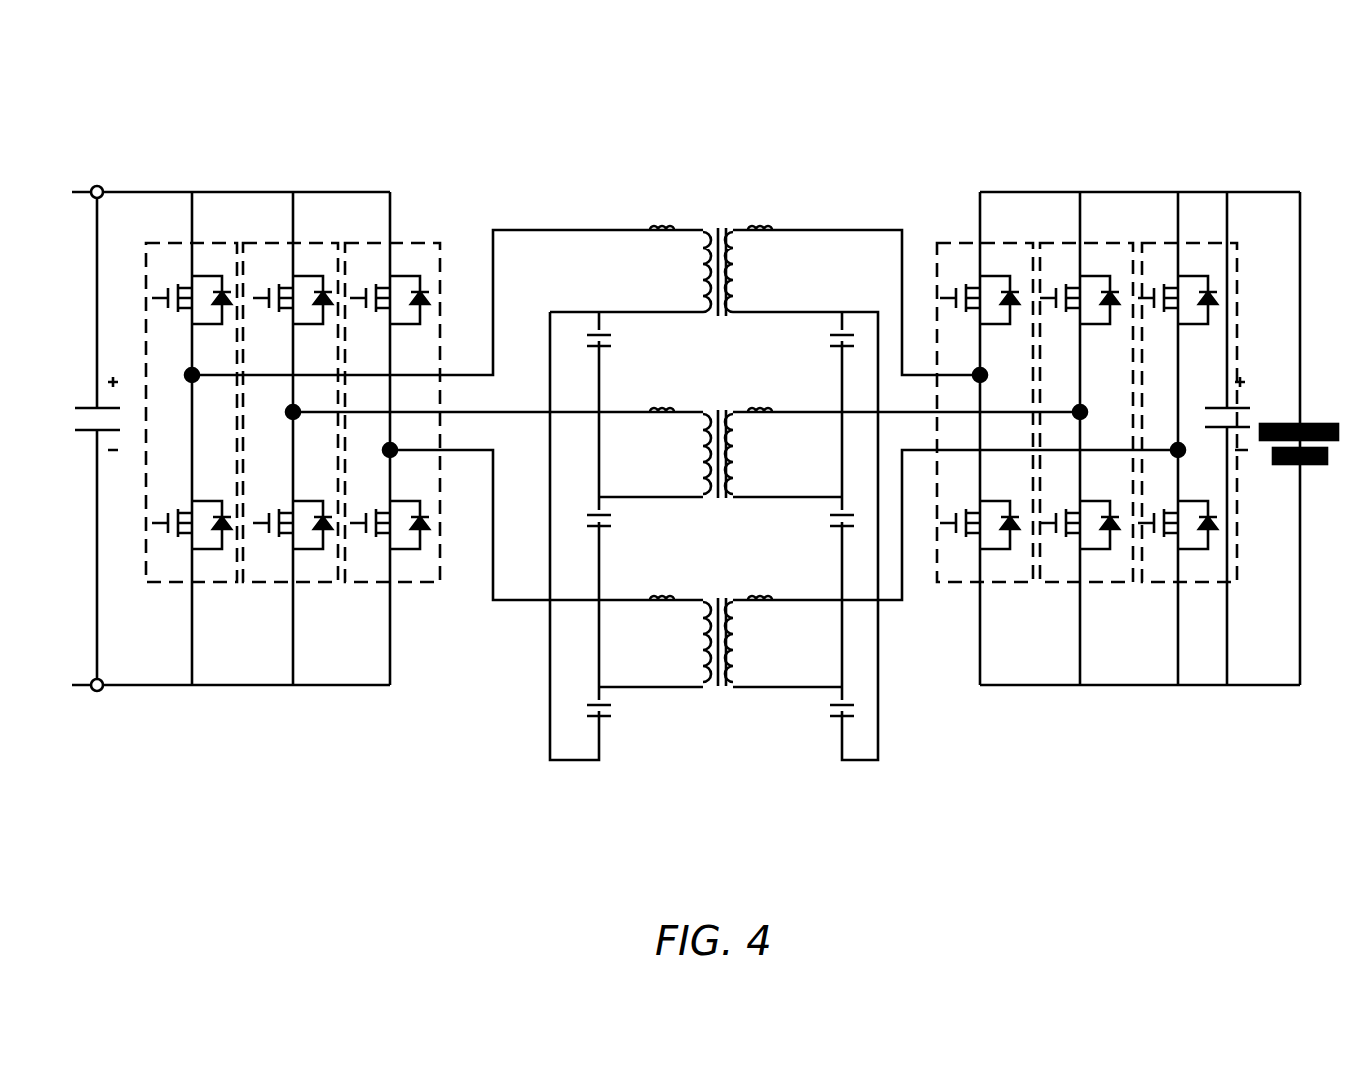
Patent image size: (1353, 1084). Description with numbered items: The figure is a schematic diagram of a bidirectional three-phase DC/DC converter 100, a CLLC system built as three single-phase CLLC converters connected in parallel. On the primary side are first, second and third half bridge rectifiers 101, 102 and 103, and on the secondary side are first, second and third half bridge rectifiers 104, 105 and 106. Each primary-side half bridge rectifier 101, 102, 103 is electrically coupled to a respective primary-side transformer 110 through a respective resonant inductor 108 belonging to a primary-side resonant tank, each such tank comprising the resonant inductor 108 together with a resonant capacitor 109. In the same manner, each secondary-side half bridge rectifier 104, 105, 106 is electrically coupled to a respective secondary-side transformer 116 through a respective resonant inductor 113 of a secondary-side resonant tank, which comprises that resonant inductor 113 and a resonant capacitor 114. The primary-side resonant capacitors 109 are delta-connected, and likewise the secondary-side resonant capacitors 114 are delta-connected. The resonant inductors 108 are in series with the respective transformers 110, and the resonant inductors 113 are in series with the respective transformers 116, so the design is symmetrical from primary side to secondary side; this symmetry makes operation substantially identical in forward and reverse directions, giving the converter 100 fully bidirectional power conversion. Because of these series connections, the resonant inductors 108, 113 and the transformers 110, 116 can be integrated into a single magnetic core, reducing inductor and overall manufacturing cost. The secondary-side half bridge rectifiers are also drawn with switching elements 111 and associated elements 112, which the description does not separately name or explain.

The bidirectional three-phase DC/DC converter 100 is at (188, 170).
The first half bridge rectifier 101 is at (205, 243).
The second half bridge rectifier 102 is at (298, 243).
The third half bridge rectifier 103 is at (410, 243).
The first half bridge rectifier 104 is at (167, 297).
The second half bridge rectifier 105 is at (225, 303).
The third half bridge rectifier 106 is at (192, 370).
The resonant inductor 108 is at (662, 225).
The resonant capacitor 109 is at (610, 338).
The transformer 110 is at (704, 270).
The switch transistor 111 is at (958, 292).
The diode 112 is at (1013, 303).
The resonant inductor 113 is at (772, 227).
The resonant capacitor 114 is at (836, 339).
The transformer 116 is at (741, 276).